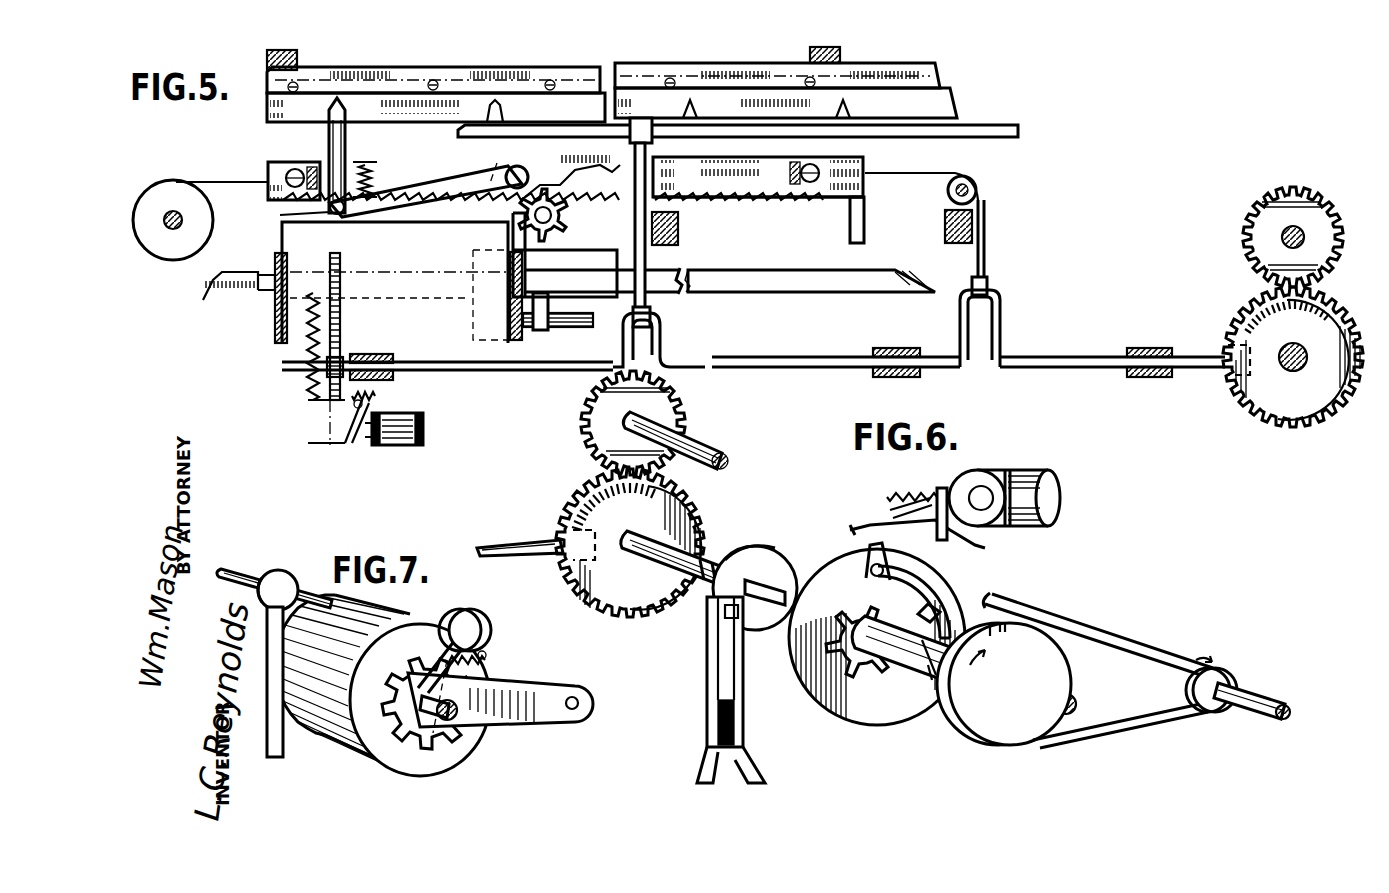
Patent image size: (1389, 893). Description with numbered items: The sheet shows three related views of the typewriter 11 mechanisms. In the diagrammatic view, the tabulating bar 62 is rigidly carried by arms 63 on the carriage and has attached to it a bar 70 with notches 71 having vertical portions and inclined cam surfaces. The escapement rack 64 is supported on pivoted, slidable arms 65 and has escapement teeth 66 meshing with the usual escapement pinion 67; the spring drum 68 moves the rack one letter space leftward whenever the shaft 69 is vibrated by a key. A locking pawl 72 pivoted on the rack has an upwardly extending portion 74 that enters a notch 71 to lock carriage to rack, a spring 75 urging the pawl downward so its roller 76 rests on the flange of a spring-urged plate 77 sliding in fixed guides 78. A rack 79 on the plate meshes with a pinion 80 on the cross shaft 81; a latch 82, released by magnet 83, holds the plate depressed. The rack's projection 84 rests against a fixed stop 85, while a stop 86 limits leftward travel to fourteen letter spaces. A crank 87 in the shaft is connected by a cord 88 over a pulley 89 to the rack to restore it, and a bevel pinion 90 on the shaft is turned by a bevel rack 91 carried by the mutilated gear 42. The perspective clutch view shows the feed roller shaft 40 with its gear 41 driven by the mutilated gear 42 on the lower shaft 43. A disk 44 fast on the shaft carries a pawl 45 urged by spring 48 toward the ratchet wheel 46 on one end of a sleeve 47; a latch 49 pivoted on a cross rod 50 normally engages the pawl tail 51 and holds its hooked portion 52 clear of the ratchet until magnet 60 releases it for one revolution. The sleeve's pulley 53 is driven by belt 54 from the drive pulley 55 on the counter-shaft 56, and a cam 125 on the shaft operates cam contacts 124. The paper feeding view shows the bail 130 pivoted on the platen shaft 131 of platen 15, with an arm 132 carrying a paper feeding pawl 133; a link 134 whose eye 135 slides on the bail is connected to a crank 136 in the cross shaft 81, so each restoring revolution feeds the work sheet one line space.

In FIG. 5, the typewriter 11 is at (803, 286).
In FIG. 7, the platen 15 is at (335, 740).
In FIG. 5, the shaft 40 is at (1282, 236).
In FIG. 6, the shaft 40 is at (706, 448).
In FIG. 5, the gear 41 is at (1316, 202).
In FIG. 6, the gear 41 is at (676, 416).
In FIG. 5, the mutilated gear 42 is at (1318, 422).
In FIG. 6, the mutilated gear 42 is at (570, 500).
In FIG. 5, the shaft 43 is at (1292, 372).
In FIG. 6, the shaft 43 is at (658, 560).
In FIG. 6, the disk 44 is at (946, 602).
In FIG. 6, the pawl 45 is at (908, 580).
In FIG. 6, the ratchet wheel 46 is at (856, 658).
In FIG. 6, the sleeve 47 is at (915, 660).
In FIG. 6, the spring 48 is at (1036, 606).
In FIG. 6, the latch 49 is at (890, 520).
In FIG. 6, the cross rod 50 is at (986, 549).
In FIG. 6, the tail 51 is at (866, 548).
In FIG. 6, the hooked portion 52 is at (932, 616).
In FIG. 6, the pulley 53 is at (985, 720).
In FIG. 6, the belt 54 is at (1132, 724).
In FIG. 6, the drive pulley 55 is at (1226, 712).
In FIG. 6, the counter-shaft 56 is at (1260, 696).
In FIG. 6, the magnet 60 is at (1018, 470).
In FIG. 5, the bar 62 is at (672, 70).
In FIG. 5, the arms 63 is at (297, 53).
In FIG. 5, the escapement rack 64 is at (757, 186).
In FIG. 5, the arms 65 is at (304, 164).
In FIG. 5, the escapement teeth 66 is at (690, 196).
In FIG. 5, the escapement pinion 67 is at (560, 217).
In FIG. 5, the spring drum 68 is at (158, 200).
In FIG. 5, the shaft 69 is at (565, 330).
In FIG. 5, the bar 70 is at (517, 128).
In FIG. 5, the notches 71 is at (488, 110).
In FIG. 5, the locking pawl 72 is at (418, 198).
In FIG. 5, the upwardly extending portion 74 is at (346, 139).
In FIG. 5, the spring 75 is at (375, 180).
In FIG. 5, the roller 76 is at (289, 215).
In FIG. 5, the plate 77 is at (300, 243).
In FIG. 5, the guides 78 is at (282, 346).
In FIG. 5, the rack 79 is at (341, 315).
In FIG. 5, the pinion 80 is at (326, 372).
In FIG. 5, the cross shaft 81 is at (471, 372).
In FIG. 6, the cross shaft 81 is at (510, 554).
In FIG. 5, the latch 82 is at (352, 442).
In FIG. 5, the magnet 83 is at (400, 440).
In FIG. 5, the projection 84 is at (864, 232).
In FIG. 5, the stop 85 is at (960, 243).
In FIG. 5, the stop 86 is at (680, 235).
In FIG. 5, the crank 87 is at (964, 298).
In FIG. 5, the cord 88 is at (985, 222).
In FIG. 5, the pulley 89 is at (976, 183).
In FIG. 5, the bevel pinion 90 is at (1243, 396).
In FIG. 6, the bevel pinion 90 is at (596, 560).
In FIG. 5, the bevel rack 91 is at (1268, 326).
In FIG. 6, the bevel rack 91 is at (612, 510).
In FIG. 6, the cam contacts 124 is at (720, 650).
In FIG. 6, the cam 125 is at (770, 565).
In FIG. 7, the bail 130 is at (238, 570).
In FIG. 7, the platen shaft 131 is at (450, 725).
In FIG. 7, the arm 132 is at (425, 647).
In FIG. 7, the paper feeding pawl 133 is at (490, 647).
In FIG. 5, the link 134 is at (647, 261).
In FIG. 7, the link 134 is at (268, 640).
In FIG. 5, the eye 135 is at (654, 140).
In FIG. 7, the eye 135 is at (258, 592).
In FIG. 5, the crank 136 is at (662, 340).